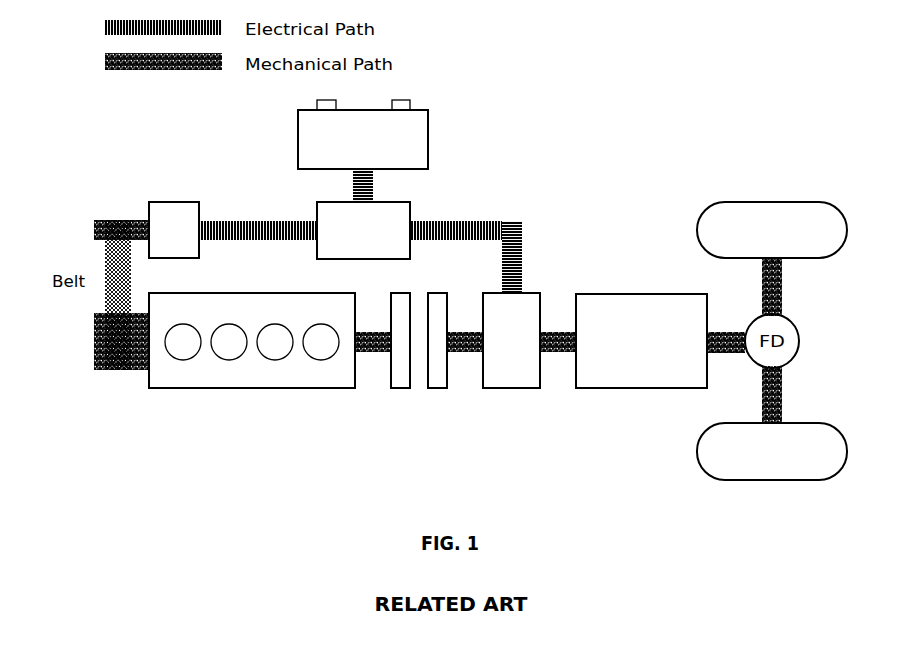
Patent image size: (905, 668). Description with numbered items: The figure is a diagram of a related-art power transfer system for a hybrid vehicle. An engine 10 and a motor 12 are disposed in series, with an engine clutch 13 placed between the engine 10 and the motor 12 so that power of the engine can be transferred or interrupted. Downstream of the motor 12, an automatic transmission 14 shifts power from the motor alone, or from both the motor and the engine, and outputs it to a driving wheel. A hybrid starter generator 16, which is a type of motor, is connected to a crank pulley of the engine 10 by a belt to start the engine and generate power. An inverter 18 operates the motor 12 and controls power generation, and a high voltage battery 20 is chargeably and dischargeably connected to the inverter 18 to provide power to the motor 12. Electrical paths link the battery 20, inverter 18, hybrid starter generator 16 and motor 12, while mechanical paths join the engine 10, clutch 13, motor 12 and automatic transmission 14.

The engine 10 is at (258, 388).
The motor 12 is at (510, 388).
The engine clutch 13 is at (400, 388).
The automatic transmission 14 is at (638, 388).
The hybrid starter generator (HSG) 16 is at (170, 202).
The inverter 18 is at (410, 204).
The high voltage battery 20 is at (298, 134).